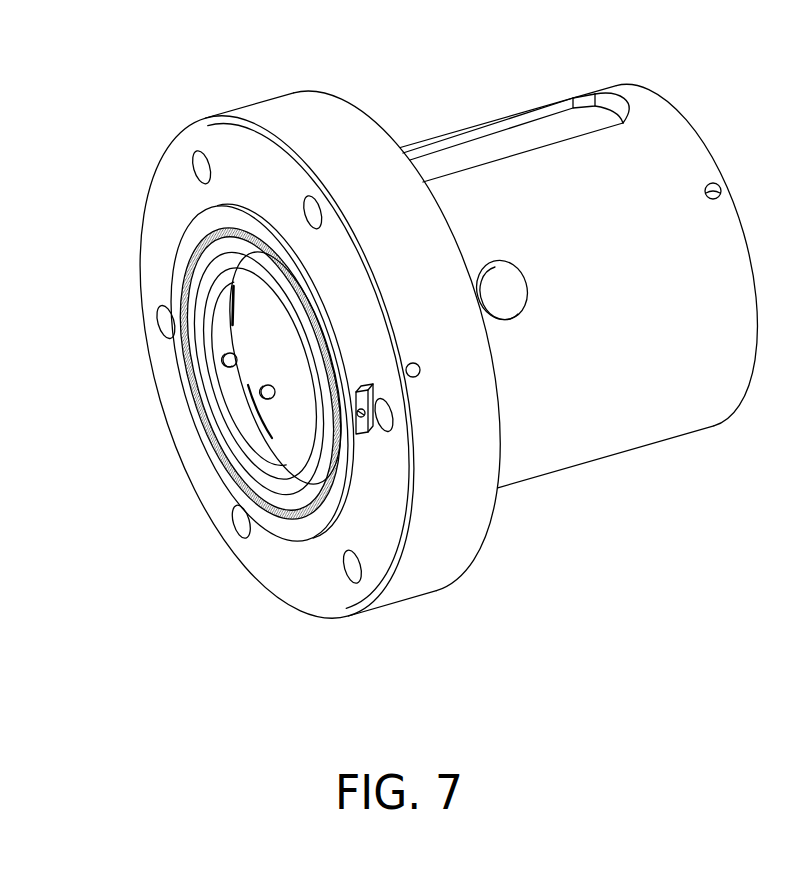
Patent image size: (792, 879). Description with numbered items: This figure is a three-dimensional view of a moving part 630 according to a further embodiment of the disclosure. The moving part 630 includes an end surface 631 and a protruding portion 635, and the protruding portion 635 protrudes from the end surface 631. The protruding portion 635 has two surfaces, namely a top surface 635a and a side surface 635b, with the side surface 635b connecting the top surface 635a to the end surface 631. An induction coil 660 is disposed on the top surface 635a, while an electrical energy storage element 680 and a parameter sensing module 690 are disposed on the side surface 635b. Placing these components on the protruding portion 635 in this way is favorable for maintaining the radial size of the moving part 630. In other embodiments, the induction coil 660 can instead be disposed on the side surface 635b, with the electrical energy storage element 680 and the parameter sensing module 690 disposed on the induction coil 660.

The moving part 630 is at (334, 118).
The end surface 631 is at (173, 185).
The protruding portion 635 is at (259, 461).
The top surface 635a is at (290, 532).
The side surface 635b is at (357, 502).
The induction coil 660 is at (185, 282).
The electrical energy storage element 680 is at (365, 413).
The parameter sensing module 690 is at (368, 432).